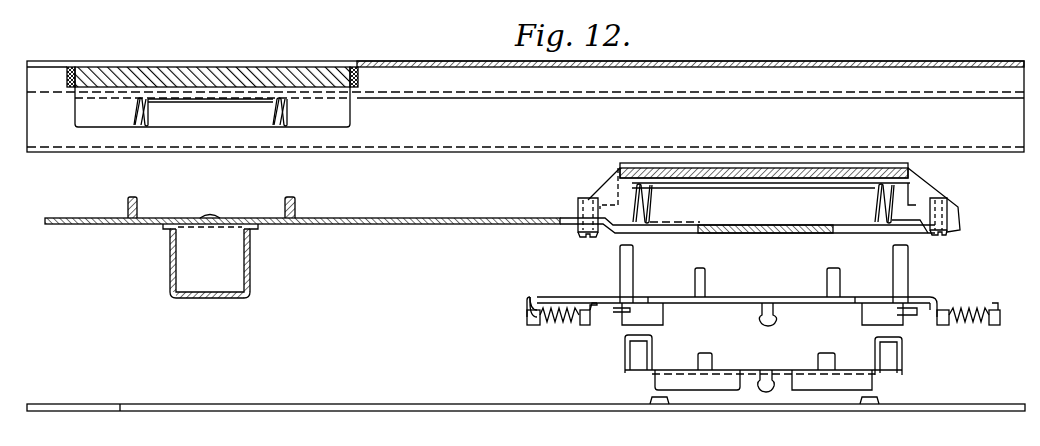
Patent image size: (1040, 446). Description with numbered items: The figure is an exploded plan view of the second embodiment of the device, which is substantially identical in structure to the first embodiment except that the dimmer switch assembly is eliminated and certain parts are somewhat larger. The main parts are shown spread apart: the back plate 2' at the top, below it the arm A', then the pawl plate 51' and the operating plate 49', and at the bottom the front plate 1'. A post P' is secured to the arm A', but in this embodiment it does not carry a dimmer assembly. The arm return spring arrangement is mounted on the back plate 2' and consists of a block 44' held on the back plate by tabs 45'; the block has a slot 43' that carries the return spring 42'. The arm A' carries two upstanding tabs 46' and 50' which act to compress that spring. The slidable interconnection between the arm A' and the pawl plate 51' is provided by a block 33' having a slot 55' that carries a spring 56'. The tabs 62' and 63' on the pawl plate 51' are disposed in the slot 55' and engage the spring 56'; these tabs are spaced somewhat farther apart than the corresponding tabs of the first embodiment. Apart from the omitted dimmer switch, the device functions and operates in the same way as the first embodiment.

The back plate 2' is at (525, 90).
The block 44' is at (212, 57).
The tabs 45' is at (210, 57).
The slot 43' is at (197, 134).
The return spring 42' is at (210, 139).
The arm A' is at (490, 238).
The tab 46' is at (107, 205).
The tab 50' is at (311, 205).
The post P' is at (210, 277).
The block 33' is at (774, 200).
The slot 55' is at (780, 206).
The spring 56' is at (763, 225).
The pawl plate 51' is at (763, 294).
The tab 62' is at (601, 274).
The tab 63' is at (920, 274).
The operating plate 49' is at (763, 363).
The front plate 1' is at (526, 398).